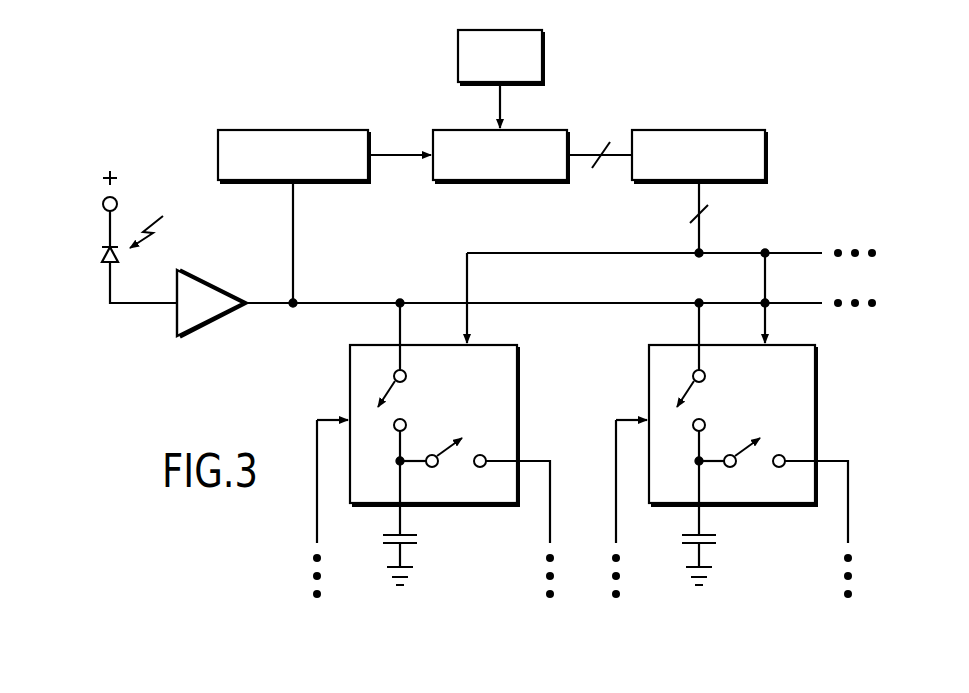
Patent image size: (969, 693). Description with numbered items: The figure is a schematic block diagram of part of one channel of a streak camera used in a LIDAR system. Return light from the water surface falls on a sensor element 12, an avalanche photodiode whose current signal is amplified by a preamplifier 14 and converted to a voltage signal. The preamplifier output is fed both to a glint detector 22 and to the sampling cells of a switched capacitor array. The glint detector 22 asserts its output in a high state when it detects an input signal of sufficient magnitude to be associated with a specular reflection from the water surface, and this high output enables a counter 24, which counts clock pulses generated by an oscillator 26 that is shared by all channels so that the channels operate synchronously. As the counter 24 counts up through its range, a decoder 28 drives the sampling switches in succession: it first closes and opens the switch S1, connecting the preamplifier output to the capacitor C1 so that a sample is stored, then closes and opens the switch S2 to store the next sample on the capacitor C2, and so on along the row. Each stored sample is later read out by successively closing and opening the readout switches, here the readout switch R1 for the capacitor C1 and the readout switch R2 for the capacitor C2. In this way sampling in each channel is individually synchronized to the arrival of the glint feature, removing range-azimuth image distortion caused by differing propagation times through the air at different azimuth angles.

The sensor element 12 is at (101, 254).
The preamplifier 14 is at (214, 289).
The glint detector 22 is at (293, 130).
The counter 24 is at (500, 180).
The oscillator 26 is at (458, 56).
The decoder 28 is at (700, 130).
The sampling switch S1 is at (415, 471).
The sampling switch S2 is at (714, 471).
The readout switch R1 is at (477, 518).
The readout switch R2 is at (775, 518).
The capacitor C1 is at (417, 544).
The capacitor C2 is at (716, 544).